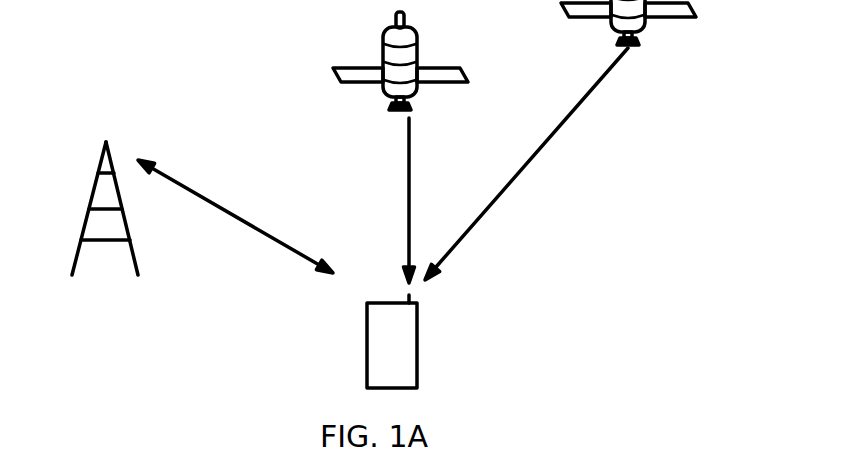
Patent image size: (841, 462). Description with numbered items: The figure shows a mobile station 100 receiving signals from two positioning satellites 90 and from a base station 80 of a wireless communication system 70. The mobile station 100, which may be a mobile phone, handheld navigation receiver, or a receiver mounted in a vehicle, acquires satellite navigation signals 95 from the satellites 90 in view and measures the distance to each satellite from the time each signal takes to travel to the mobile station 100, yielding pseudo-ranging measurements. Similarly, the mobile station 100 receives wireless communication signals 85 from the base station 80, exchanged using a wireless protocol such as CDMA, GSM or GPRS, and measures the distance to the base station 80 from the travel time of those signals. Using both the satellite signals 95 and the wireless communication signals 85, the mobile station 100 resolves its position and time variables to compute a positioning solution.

The wireless communication system 70 is at (86, 60).
The base station 80 is at (91, 192).
The wireless communication signals 85 is at (268, 237).
The positioning satellite 90 is at (441, 68).
The satellite navigation signals 95 is at (503, 192).
The mobile station 100 is at (382, 302).